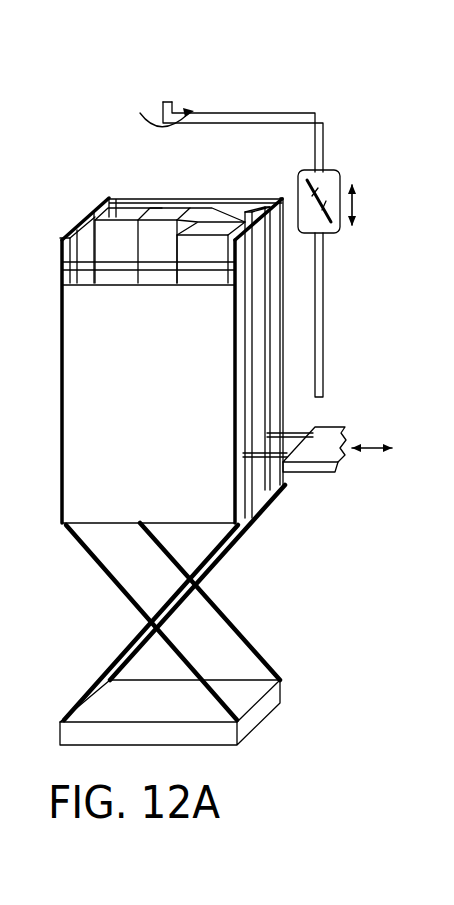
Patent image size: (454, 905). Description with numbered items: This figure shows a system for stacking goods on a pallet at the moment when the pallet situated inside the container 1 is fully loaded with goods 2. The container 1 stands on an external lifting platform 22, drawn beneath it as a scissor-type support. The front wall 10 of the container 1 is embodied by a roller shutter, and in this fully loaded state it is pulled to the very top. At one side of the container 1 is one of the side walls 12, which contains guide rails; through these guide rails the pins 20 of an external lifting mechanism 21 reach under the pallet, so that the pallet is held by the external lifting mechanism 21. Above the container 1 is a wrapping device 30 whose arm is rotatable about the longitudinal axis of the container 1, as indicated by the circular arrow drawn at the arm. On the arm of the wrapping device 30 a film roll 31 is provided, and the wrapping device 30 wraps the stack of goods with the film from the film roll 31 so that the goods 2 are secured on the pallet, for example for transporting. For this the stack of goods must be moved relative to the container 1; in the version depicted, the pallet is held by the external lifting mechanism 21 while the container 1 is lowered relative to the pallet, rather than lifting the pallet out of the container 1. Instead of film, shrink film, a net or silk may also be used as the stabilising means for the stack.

The container 1 is at (93, 74).
The goods 2 is at (148, 203).
The front wall 10 is at (153, 462).
The side wall 12 is at (281, 323).
The pins 20 is at (297, 433).
The external lifting mechanism 21 is at (333, 474).
The lifting platform 22 is at (251, 645).
The wrapping device 30 is at (250, 112).
The film roll 31 is at (337, 190).